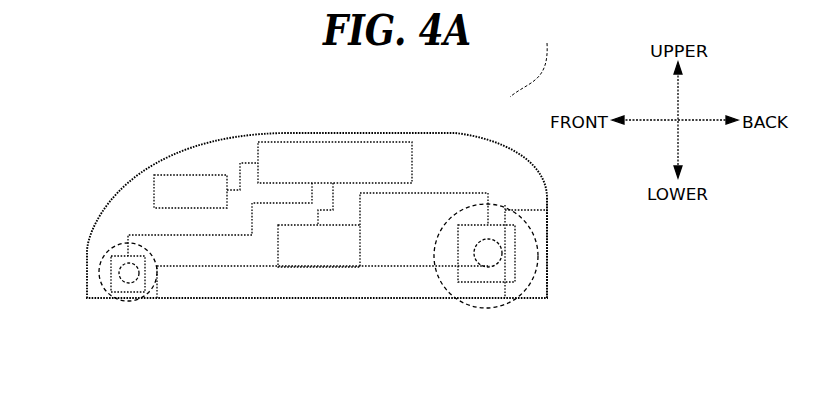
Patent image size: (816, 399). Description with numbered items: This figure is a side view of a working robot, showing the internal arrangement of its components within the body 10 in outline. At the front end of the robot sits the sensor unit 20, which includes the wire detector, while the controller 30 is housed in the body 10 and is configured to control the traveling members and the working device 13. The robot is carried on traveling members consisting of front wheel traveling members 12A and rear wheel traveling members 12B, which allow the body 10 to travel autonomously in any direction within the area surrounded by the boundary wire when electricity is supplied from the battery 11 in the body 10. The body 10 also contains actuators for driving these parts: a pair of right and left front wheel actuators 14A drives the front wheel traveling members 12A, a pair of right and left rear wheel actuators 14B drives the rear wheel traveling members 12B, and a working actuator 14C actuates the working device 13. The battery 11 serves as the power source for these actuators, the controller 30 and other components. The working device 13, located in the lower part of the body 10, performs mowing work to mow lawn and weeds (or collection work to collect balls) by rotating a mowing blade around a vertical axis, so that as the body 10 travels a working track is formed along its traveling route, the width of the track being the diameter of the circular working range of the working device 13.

The body 10 is at (423, 133).
The battery 11 is at (548, 198).
The sensor unit 20 is at (188, 174).
The controller 30 is at (323, 141).
The working device 13 is at (273, 300).
The front wheel actuators 14A is at (120, 245).
The rear wheel actuators 14B is at (542, 254).
The working actuator 14C is at (364, 250).
The front wheel traveling members 12A is at (127, 301).
The rear wheel traveling members 12B is at (478, 301).